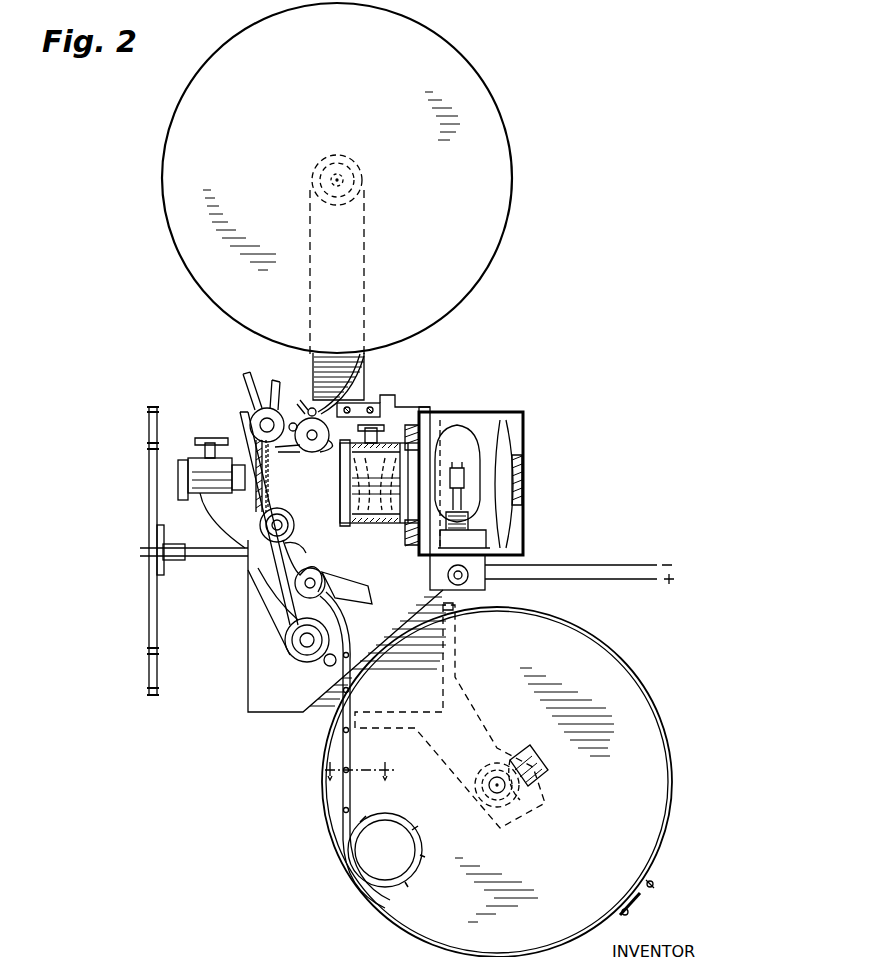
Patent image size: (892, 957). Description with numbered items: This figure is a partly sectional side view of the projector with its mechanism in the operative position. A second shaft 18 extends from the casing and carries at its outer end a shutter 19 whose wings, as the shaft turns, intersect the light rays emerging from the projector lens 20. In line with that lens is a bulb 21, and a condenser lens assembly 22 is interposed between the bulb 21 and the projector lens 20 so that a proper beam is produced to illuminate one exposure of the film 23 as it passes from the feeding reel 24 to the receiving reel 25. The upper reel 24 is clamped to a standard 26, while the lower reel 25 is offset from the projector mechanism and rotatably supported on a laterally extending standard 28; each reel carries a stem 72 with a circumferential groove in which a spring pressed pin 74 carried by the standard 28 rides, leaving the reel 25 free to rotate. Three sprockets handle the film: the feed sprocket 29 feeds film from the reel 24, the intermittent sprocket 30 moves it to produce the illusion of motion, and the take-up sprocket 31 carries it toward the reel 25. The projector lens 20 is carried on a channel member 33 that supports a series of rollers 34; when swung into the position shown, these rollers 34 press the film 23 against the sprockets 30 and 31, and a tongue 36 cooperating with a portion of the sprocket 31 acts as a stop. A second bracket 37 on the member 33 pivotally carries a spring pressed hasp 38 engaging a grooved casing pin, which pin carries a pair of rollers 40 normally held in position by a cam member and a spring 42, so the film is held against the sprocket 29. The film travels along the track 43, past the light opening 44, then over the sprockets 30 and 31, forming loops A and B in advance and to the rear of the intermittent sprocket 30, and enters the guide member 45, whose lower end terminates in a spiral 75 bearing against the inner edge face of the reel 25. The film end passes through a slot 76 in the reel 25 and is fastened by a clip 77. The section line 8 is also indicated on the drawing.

The section line 8 is at (360, 761).
The second shaft 18 is at (215, 557).
The shutter 19 is at (150, 597).
The projector lens 20 is at (188, 462).
The bulb 21 is at (465, 445).
The condenser lens assembly 22 is at (380, 462).
The film 23 is at (356, 380).
The feeding reel 24 is at (337, 178).
The receiving reel 25 is at (497, 782).
The standard 26 is at (312, 364).
The laterally extending standard 28 is at (450, 715).
The feed sprocket 29 is at (318, 453).
The intermittent sprocket 30 is at (294, 523).
The take-up sprocket 31 is at (327, 579).
The channel member 33 is at (292, 616).
The rollers 34 is at (310, 562).
The tongue 36 is at (342, 598).
The second bracket 37 is at (242, 420).
The spring pressed hasp 38 is at (252, 401).
The rollers 40 is at (310, 405).
The spring 42 is at (358, 403).
The track 43 is at (266, 497).
The light opening 44 is at (264, 483).
The guide member 45 is at (351, 633).
The stem 72 is at (355, 175).
The spring pressed pin 74 is at (520, 748).
The spiral 75 is at (412, 840).
The slot 76 is at (630, 905).
The clip 77 is at (645, 895).
The loop A is at (280, 453).
The loop B is at (304, 545).